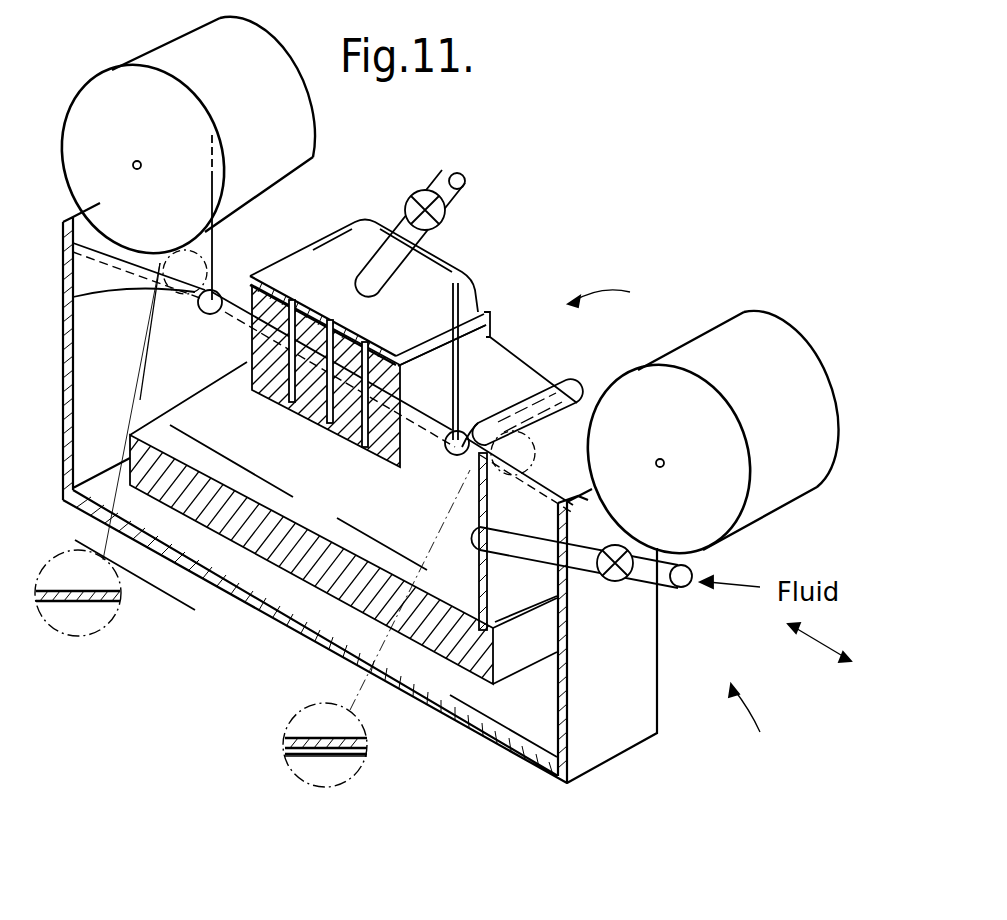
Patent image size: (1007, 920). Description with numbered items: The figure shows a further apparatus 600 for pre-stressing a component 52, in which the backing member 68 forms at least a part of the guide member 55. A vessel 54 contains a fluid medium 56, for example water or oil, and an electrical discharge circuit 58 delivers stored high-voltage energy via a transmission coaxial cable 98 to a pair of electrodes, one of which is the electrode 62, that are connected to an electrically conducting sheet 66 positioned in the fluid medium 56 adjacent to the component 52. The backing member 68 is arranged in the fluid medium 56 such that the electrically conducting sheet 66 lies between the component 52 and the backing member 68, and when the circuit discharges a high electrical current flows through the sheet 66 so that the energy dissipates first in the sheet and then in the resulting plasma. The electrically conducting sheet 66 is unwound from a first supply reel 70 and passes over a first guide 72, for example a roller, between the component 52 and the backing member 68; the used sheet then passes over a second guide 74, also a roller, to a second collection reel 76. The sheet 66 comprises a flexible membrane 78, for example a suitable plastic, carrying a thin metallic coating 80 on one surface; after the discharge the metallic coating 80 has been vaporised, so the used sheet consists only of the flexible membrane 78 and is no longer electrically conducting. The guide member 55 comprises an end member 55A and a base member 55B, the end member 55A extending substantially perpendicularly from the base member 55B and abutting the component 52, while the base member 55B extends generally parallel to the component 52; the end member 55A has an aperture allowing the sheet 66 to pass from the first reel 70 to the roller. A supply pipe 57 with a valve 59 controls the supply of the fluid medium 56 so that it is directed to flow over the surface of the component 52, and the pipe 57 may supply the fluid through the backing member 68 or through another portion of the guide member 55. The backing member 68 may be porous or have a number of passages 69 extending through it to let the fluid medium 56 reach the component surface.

The component 52 is at (566, 668).
The vessel 54 is at (567, 733).
The guide member 55 is at (563, 385).
The end member 55A is at (560, 622).
The base member 55B is at (490, 410).
The fluid medium 56 is at (520, 715).
The supply pipe 57 is at (443, 176).
The electrical discharge circuit 58 is at (615, 297).
The valve 59 is at (445, 212).
The electrode 62 is at (212, 290).
The electrically conducting sheet 66 is at (75, 243).
The backing member 68 is at (307, 305).
The passages 69 is at (292, 300).
The first supply reel 70 is at (732, 449).
The first guide 72 is at (452, 456).
The second guide 74 is at (135, 288).
The second collection reel 76 is at (117, 103).
The flexible membrane 78 is at (58, 593).
The metallic coating 80 is at (363, 738).
The transmission coaxial cable 98 is at (212, 165).
The further apparatus 600 is at (756, 727).